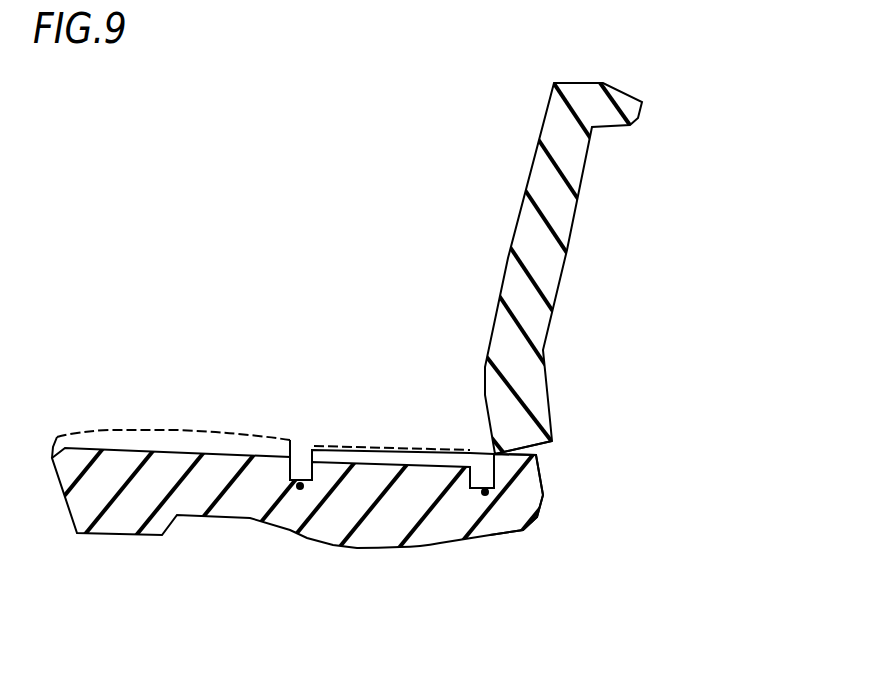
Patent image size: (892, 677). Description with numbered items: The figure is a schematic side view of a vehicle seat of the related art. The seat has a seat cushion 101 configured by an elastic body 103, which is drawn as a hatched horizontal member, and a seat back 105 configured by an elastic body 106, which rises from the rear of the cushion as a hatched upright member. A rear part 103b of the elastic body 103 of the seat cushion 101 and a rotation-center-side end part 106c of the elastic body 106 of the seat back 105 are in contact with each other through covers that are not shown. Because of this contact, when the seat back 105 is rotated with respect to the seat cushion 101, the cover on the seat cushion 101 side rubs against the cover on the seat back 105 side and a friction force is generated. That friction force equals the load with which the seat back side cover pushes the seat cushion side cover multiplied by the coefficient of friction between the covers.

The seat cushion 101 is at (222, 436).
The elastic body 103 is at (205, 490).
The rear part 103b is at (515, 462).
The seat back 105 is at (587, 225).
The elastic body 106 is at (528, 310).
The rotation-center-side end part 106c is at (525, 439).